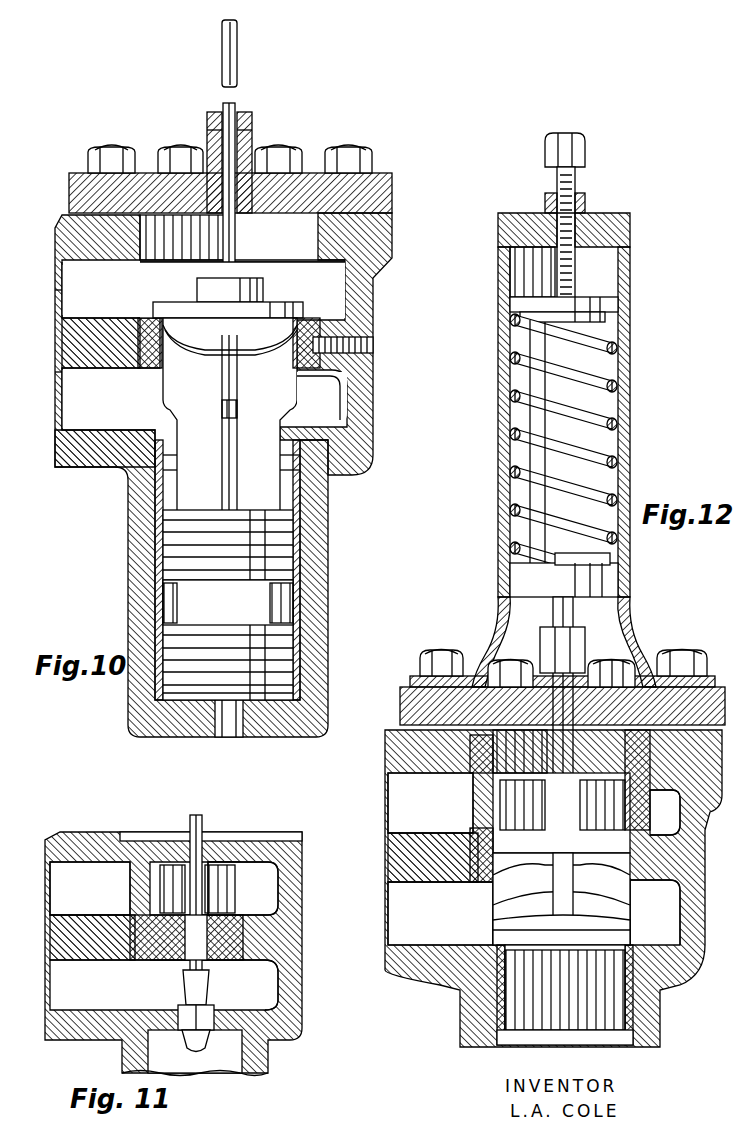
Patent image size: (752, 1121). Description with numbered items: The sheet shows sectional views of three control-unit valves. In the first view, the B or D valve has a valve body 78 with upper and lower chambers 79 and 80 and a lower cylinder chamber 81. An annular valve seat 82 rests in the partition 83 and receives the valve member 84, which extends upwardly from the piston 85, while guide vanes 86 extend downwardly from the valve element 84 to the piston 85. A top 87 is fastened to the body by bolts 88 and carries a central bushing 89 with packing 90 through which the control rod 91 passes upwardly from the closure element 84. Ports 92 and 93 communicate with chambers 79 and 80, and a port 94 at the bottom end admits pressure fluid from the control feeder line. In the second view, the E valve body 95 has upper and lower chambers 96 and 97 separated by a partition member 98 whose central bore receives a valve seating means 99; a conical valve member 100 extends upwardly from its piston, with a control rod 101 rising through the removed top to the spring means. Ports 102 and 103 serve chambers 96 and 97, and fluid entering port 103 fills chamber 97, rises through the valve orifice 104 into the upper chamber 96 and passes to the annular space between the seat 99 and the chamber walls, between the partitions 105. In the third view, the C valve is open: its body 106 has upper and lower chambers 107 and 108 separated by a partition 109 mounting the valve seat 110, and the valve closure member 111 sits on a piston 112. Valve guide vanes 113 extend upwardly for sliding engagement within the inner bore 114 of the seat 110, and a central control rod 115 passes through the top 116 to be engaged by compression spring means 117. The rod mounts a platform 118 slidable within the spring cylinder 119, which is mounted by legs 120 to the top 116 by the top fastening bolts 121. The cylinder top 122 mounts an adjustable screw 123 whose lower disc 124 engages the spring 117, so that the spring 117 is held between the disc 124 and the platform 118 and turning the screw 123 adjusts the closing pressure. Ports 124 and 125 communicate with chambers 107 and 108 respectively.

In FIG. 10, the valve body 78 is at (332, 520).
In FIG. 10, the upper chamber 79 is at (335, 300).
In FIG. 10, the lower chamber 80 is at (335, 399).
In FIG. 10, the lower cylinder chamber 81 is at (293, 490).
In FIG. 10, the annular valve seat 82 is at (318, 310).
In FIG. 10, the partition 83 is at (112, 322).
In FIG. 10, the valve member 84 is at (200, 357).
In FIG. 10, the piston 85 is at (200, 530).
In FIG. 10, the guide vanes 86 is at (178, 405).
In FIG. 10, the top 87 is at (392, 190).
In FIG. 10, the bolts 88 is at (160, 148).
In FIG. 10, the central bushing 89 is at (252, 128).
In FIG. 10, the packing 90 is at (207, 128).
In FIG. 10, the control rod 91 is at (237, 56).
In FIG. 10, the port 92 is at (62, 283).
In FIG. 10, the port 93 is at (62, 393).
In FIG. 10, the port 94 is at (232, 727).
In FIG. 11, the body 95 is at (298, 1004).
In FIG. 11, the upper chamber 96 is at (262, 895).
In FIG. 11, the lower chamber 97 is at (265, 992).
In FIG. 11, the partition member 98 is at (92, 924).
In FIG. 11, the valve seating means 99 is at (152, 945).
In FIG. 11, the conical valve member 100 is at (207, 992).
In FIG. 11, the control rod 101 is at (202, 825).
In FIG. 11, the port 102 is at (68, 875).
In FIG. 11, the port 103 is at (80, 990).
In FIG. 11, the valve orifice 104 is at (205, 955).
In FIG. 11, the partitions 105 is at (148, 884).
In FIG. 12, the body 106 is at (675, 985).
In FIG. 12, the upper chamber 107 is at (672, 808).
In FIG. 12, the lower chamber 108 is at (668, 915).
In FIG. 12, the partition 109 is at (430, 850).
In FIG. 12, the valve seat 110 is at (561, 899).
In FIG. 12, the valve closure member 111 is at (515, 928).
In FIG. 12, the piston 112 is at (530, 1048).
In FIG. 12, the valve guide vanes 113 is at (565, 880).
In FIG. 12, the inner bore 114 is at (515, 815).
In FIG. 12, the central control rod 115 is at (565, 755).
In FIG. 12, the top 116 is at (410, 705).
In FIG. 12, the compression spring means 117 is at (600, 415).
In FIG. 12, the platform 118 is at (515, 582).
In FIG. 12, the spring cylinder 119 is at (628, 470).
In FIG. 12, the legs 120 is at (500, 625).
In FIG. 12, the top fastening bolts 121 is at (440, 658).
In FIG. 12, the top 122 is at (605, 218).
In FIG. 12, the adjustable screw 123 is at (577, 182).
In FIG. 12, the disc 124 is at (597, 303).
In FIG. 12, the port 125 is at (400, 908).